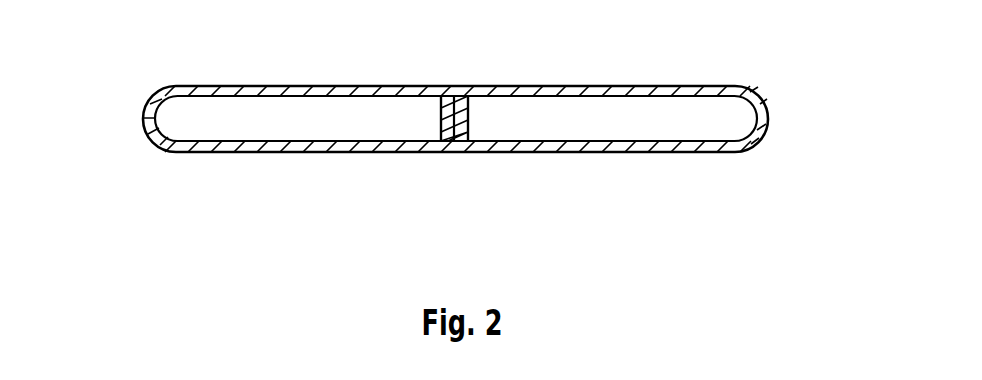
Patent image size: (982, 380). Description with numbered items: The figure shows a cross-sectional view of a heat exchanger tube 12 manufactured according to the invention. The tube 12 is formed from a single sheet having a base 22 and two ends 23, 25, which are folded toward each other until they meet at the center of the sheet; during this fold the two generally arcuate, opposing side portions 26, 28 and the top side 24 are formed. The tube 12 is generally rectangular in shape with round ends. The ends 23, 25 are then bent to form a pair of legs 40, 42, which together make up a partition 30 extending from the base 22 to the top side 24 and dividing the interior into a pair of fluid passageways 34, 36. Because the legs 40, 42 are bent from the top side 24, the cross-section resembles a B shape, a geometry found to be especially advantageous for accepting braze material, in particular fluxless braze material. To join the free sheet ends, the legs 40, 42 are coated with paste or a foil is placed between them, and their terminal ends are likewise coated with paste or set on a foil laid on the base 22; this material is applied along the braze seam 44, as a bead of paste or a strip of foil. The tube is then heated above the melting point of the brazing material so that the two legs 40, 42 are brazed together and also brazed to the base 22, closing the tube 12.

The tube 12 is at (758, 90).
The base 22 is at (720, 152).
The end 23 is at (441, 108).
The top side 24 is at (630, 88).
The end 25 is at (468, 108).
The side portion 26 is at (142, 118).
The side portion 28 is at (768, 122).
The partition 30 is at (478, 152).
The fluid passageway 34 is at (218, 120).
The fluid passageway 36 is at (575, 120).
The leg 40 is at (440, 125).
The leg 42 is at (468, 122).
The braze seam 44 is at (454, 96).